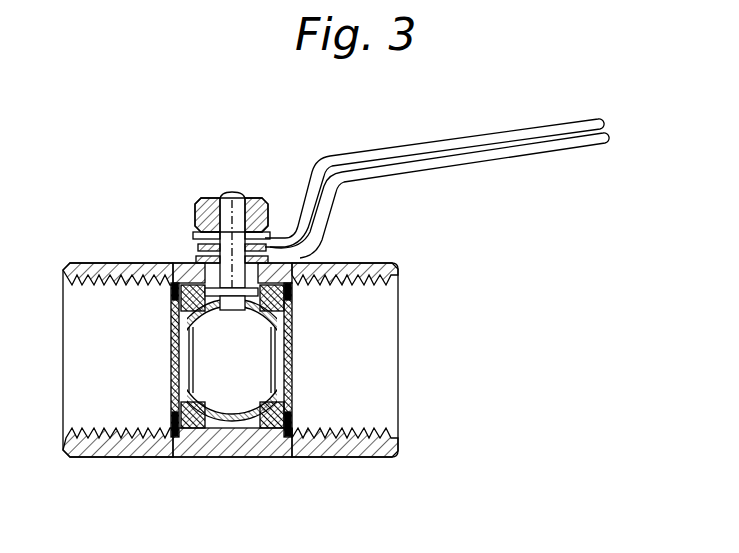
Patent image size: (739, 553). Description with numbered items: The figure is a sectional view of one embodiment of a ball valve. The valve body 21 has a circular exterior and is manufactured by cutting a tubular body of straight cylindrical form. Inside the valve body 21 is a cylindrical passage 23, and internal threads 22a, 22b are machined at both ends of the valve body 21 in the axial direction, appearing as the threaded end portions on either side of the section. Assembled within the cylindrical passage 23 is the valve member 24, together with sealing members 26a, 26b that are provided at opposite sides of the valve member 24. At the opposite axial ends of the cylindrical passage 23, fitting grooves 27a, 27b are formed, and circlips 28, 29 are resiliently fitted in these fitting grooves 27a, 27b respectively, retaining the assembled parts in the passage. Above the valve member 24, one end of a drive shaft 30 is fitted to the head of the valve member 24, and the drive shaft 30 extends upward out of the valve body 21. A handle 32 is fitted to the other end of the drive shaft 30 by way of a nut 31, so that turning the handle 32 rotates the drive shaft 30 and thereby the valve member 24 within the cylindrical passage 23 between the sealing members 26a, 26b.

The valve body 21 is at (127, 265).
The internal thread 22a is at (350, 282).
The internal thread 22b is at (92, 297).
The cylindrical passage 23 is at (247, 423).
The valve member 24 is at (227, 420).
The sealing member 26a is at (290, 263).
The sealing member 26b is at (181, 283).
The fitting groove 27a is at (280, 433).
The fitting groove 27b is at (178, 433).
The circlip 28 is at (291, 388).
The circlip 29 is at (173, 385).
The drive shaft 30 is at (232, 200).
The nut 31 is at (207, 200).
The handle 32 is at (460, 140).